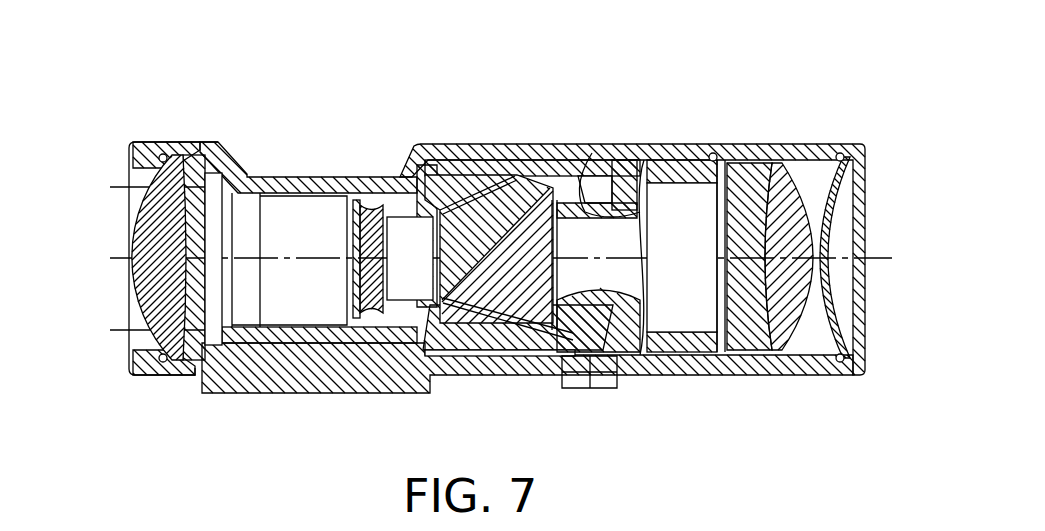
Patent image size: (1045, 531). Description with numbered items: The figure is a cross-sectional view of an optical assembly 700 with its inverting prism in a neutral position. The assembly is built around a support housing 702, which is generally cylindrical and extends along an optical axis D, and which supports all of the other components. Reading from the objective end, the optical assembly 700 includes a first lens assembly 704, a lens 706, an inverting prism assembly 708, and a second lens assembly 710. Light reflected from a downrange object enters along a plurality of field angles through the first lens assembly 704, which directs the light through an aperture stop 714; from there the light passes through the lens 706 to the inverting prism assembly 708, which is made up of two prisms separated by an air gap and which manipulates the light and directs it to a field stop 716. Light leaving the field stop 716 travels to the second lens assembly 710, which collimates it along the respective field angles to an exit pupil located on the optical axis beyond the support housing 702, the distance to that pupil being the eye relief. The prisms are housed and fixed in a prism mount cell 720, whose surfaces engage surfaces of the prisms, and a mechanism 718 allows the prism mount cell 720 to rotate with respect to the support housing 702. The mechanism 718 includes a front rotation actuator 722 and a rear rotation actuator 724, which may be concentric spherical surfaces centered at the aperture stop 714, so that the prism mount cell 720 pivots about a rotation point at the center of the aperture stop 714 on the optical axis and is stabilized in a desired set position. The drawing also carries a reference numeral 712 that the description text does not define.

The optical assembly 700 is at (692, 78).
The support housing 702 is at (262, 378).
The first lens assembly 704 is at (140, 212).
The lens 706 is at (363, 175).
The inverting prism assembly 708 is at (508, 195).
The second lens assembly 710 is at (770, 146).
The front cap 712 is at (122, 330).
The aperture stop 714 is at (272, 174).
The field stop 716 is at (657, 360).
The mechanism 718 is at (462, 358).
The prism mount cell 720 is at (497, 350).
The front rotation actuator 722 is at (432, 175).
The rear rotation actuator 724 is at (598, 147).